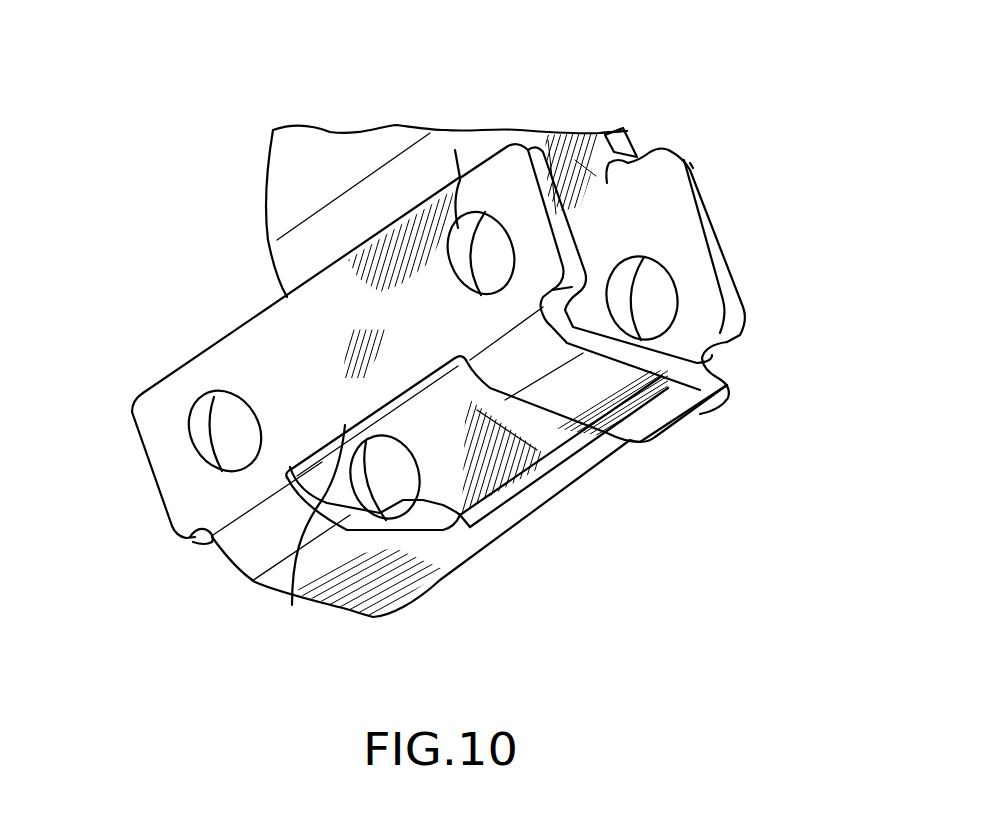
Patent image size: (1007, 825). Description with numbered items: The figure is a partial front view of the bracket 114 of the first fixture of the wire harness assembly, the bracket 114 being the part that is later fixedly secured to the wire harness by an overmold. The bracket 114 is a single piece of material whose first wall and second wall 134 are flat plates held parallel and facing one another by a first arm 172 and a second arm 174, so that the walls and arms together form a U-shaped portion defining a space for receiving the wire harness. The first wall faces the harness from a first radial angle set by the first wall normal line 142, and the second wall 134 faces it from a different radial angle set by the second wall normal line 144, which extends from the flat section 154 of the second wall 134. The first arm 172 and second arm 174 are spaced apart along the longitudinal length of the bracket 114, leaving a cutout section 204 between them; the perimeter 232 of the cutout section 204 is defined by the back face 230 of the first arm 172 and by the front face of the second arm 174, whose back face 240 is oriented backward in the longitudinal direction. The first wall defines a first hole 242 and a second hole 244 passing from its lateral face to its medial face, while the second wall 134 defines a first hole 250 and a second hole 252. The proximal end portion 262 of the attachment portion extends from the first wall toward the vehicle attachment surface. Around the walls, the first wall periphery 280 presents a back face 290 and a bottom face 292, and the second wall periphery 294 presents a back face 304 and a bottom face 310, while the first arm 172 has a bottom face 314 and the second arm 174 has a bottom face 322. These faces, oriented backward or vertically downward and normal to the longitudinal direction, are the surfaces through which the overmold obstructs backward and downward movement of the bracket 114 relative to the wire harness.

The bracket 114 is at (627, 137).
The second wall 134 is at (363, 335).
The first wall normal line 142 is at (450, 400).
The second wall normal line 144 is at (443, 367).
The flat section 154 is at (357, 353).
The first arm 172 is at (357, 587).
The second arm 174 is at (605, 393).
The cutout section 204 is at (517, 480).
The back face 230 is at (403, 540).
The perimeter 232 is at (348, 472).
The back face 240 is at (697, 400).
The first hole 242 is at (466, 522).
The second hole 244 is at (625, 280).
The first hole 250 is at (203, 410).
The second hole 252 is at (463, 237).
The proximal end portion 262 is at (452, 148).
The first wall periphery 280 is at (693, 183).
The back face 290 is at (717, 257).
The bottom face 292 is at (547, 463).
The second wall periphery 294 is at (572, 157).
The back face 304 is at (555, 152).
The bottom face 310 is at (293, 600).
The bottom face 314 is at (385, 587).
The bottom face 322 is at (632, 420).